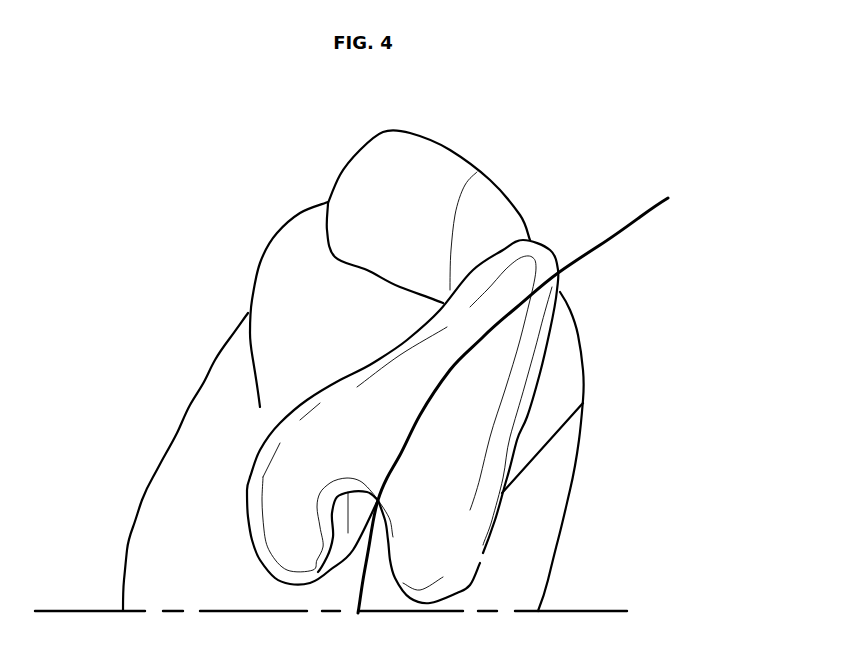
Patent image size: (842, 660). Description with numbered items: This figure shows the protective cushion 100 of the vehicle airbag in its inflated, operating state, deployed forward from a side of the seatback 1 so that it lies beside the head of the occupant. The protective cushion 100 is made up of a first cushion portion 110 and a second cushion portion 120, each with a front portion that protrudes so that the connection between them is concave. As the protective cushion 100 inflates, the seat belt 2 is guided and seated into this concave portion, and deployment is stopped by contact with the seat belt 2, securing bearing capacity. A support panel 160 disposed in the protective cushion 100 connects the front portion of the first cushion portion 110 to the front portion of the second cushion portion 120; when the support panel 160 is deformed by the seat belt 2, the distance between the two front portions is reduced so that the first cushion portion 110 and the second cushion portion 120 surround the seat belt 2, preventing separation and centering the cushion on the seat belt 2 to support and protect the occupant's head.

The seatback 1 is at (303, 282).
The seat belt 2 is at (642, 215).
The protective cushion 100 is at (557, 343).
The first cushion portion 110 is at (452, 510).
The second cushion portion 120 is at (283, 503).
The support panel 160 is at (378, 500).